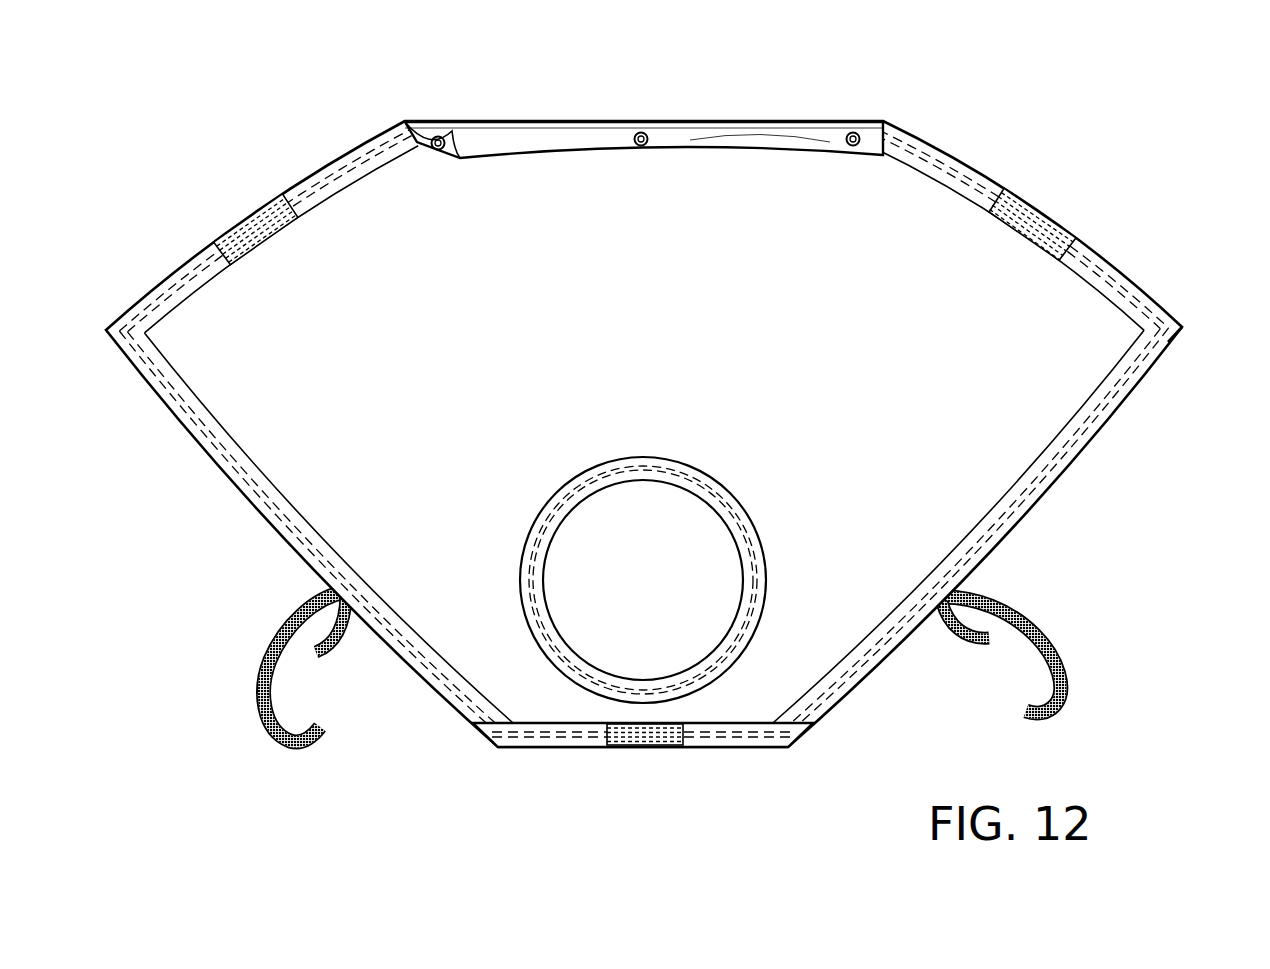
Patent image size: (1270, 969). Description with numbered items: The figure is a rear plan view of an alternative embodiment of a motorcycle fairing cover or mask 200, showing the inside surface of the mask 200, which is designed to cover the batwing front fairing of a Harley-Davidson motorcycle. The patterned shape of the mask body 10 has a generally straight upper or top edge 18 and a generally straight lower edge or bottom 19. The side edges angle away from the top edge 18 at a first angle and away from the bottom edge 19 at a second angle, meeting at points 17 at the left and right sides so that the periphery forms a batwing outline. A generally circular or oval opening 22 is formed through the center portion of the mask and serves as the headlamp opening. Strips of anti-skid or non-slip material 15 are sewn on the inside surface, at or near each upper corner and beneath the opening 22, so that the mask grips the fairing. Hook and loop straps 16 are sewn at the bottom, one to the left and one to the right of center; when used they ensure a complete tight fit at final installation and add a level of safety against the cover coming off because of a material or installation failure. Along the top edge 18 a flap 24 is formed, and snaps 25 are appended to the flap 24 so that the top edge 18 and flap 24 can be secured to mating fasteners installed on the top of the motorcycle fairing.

The motorcycle fairing cover or mask 200 is at (236, 168).
The panel body 10 is at (1090, 303).
The strips of anti-skid/non-slip material 15 is at (240, 232).
The hook and loop straps 16 is at (263, 678).
The points 17 is at (1186, 329).
The upper or top edge 18 is at (632, 118).
The lower edge or bottom 19 is at (708, 748).
The circular or oval opening 22 is at (656, 592).
The flap 24 is at (517, 138).
The snaps 25 is at (433, 137).